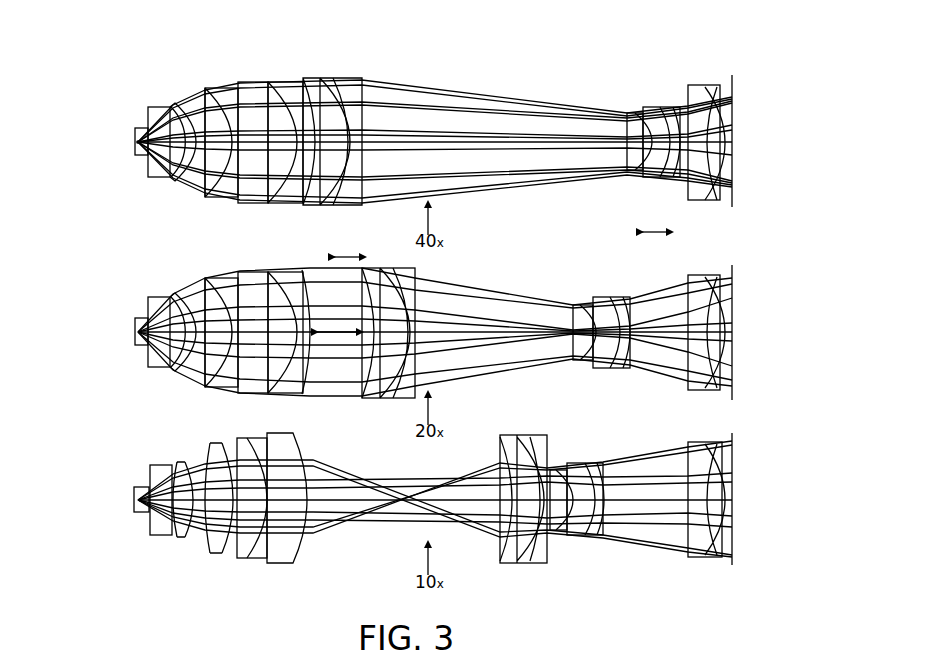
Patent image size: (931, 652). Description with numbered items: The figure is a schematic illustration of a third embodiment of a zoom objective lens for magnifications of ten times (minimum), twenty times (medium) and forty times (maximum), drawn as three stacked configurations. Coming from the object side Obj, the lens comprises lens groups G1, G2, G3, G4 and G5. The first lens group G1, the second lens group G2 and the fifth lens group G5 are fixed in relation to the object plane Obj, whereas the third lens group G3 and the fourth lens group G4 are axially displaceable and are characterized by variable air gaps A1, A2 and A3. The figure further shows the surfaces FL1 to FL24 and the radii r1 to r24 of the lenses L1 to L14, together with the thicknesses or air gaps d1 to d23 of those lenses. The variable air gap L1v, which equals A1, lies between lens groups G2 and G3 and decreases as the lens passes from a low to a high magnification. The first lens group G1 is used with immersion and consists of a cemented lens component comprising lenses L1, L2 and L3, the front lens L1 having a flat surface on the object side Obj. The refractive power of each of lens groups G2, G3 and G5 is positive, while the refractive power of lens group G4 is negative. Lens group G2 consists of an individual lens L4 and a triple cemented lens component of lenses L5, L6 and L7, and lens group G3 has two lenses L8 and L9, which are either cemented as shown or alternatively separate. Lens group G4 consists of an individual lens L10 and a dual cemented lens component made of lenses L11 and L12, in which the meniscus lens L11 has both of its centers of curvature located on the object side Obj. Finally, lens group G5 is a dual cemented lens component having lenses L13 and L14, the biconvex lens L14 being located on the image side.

The object side Obj is at (92, 129).
The first lens surface FL1 is at (138, 150).
The front lens L1 is at (148, 104).
The lens L2 is at (168, 102).
The lens L3 is at (185, 99).
The individual lens L4 is at (212, 95).
The lens L5 is at (257, 80).
The lens L6 is at (280, 78).
The lens L7 is at (302, 78).
The lens L8 is at (330, 90).
The lens L9 is at (360, 85).
The individual lens L10 is at (628, 113).
The meniscus lens L11 is at (650, 108).
The lens L12 is at (672, 110).
The lens L13 is at (703, 92).
The biconvex lens L14 is at (718, 97).
The first lens group G1 is at (162, 125).
The second lens group G2 is at (247, 129).
The third lens group G3 is at (343, 125).
The fourth lens group G4 is at (642, 125).
The fifth lens group G5 is at (738, 137).
The last lens surface FL24 is at (731, 144).
The first radius r1 is at (134, 338).
The last radius r24 is at (731, 330).
The variable air gap L1v is at (340, 345).
The first thickness d1 is at (142, 516).
The last thickness d23 is at (717, 491).
The first variable air gap A1 is at (372, 512).
The second variable air gap A2 is at (552, 537).
The third variable air gap A3 is at (642, 515).